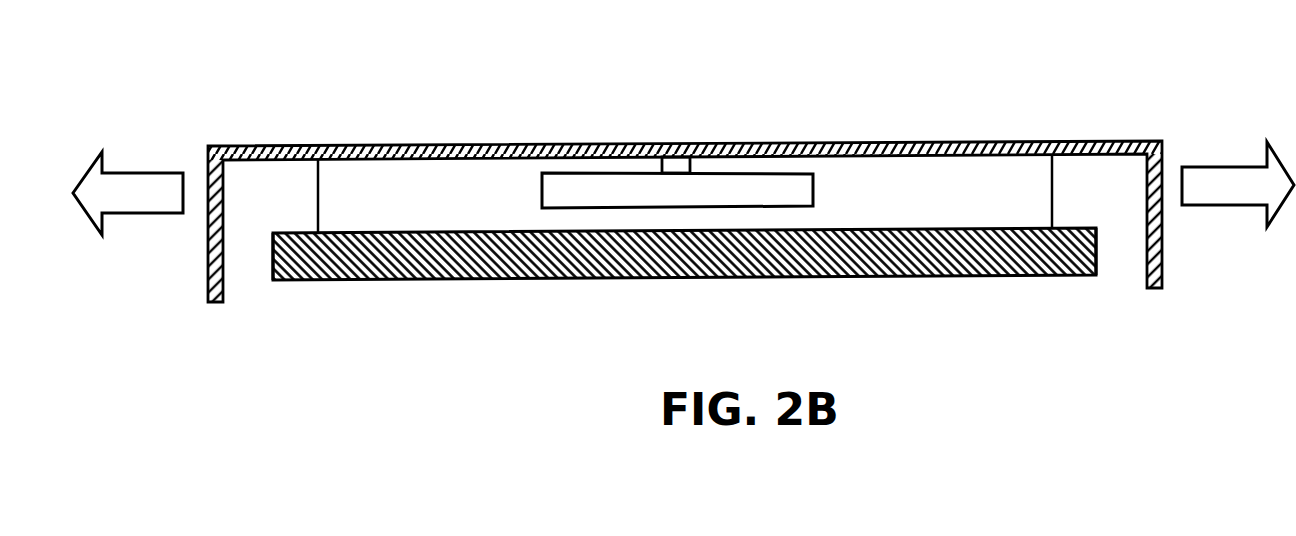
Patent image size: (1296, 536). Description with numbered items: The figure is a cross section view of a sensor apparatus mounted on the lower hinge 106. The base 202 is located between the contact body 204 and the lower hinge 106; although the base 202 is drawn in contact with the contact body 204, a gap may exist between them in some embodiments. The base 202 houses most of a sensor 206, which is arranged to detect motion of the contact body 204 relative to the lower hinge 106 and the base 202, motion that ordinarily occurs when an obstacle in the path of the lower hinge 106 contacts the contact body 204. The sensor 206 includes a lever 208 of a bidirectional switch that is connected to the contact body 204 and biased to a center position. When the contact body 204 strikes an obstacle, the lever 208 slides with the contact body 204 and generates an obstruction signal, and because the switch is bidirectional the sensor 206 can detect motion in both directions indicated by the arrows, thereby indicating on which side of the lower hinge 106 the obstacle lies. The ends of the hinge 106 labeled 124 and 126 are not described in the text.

The lower hinge 106 is at (467, 280).
The first end of substrate 124 is at (272, 266).
The second end of substrate 126 is at (1097, 249).
The base 202 is at (1053, 192).
The contact body 204 is at (323, 145).
The sensor 206 is at (815, 183).
The lever 208 is at (680, 150).